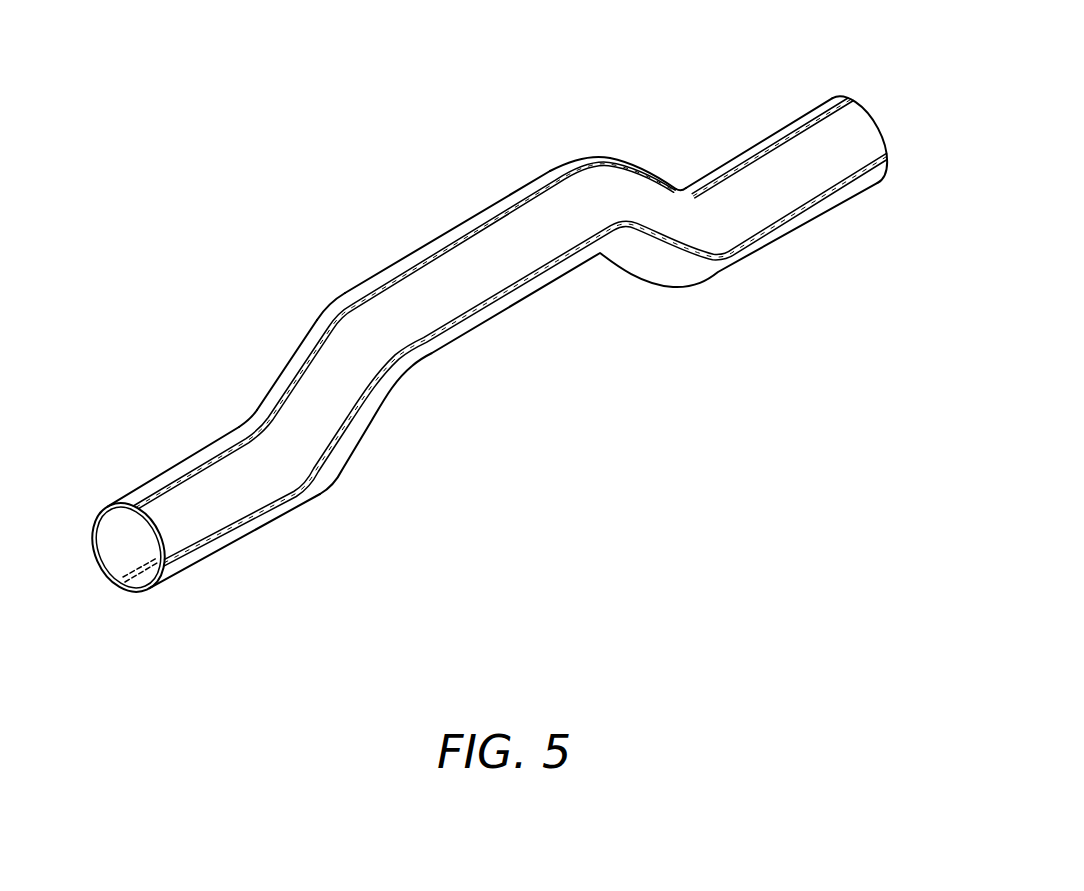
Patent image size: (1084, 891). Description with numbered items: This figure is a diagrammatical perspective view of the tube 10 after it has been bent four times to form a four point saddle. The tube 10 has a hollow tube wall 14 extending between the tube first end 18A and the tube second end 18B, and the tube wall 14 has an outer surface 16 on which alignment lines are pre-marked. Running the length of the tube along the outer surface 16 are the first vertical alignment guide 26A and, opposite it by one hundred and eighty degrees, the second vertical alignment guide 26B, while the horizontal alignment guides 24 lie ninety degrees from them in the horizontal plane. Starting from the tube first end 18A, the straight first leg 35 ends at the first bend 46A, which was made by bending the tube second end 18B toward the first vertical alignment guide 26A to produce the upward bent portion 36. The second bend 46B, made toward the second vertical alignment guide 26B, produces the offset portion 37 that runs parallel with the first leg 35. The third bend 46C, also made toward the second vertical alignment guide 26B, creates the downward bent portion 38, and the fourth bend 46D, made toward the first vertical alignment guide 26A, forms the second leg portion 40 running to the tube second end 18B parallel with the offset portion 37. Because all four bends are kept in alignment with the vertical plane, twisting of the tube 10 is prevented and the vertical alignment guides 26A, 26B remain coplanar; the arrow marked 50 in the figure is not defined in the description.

The tube 10 is at (613, 395).
The tube wall 14 is at (143, 593).
The outer surface 16 is at (185, 520).
The tube first end 18A is at (130, 593).
The tube second end 18B is at (887, 170).
The horizontal alignment guides 24 is at (270, 512).
The first vertical alignment guide 26A is at (188, 472).
The second vertical alignment guide 26B is at (117, 583).
The first leg 35 is at (142, 487).
The upward bent portion 36 is at (315, 333).
The offset portion 37 is at (450, 263).
The downward bent portion 38 is at (633, 177).
The second leg portion 40 is at (803, 115).
The first bend 46A is at (240, 405).
The second bend 46B is at (322, 297).
The third bend 46C is at (613, 137).
The fourth bend 46D is at (680, 168).
The bending direction 50 is at (488, 142).